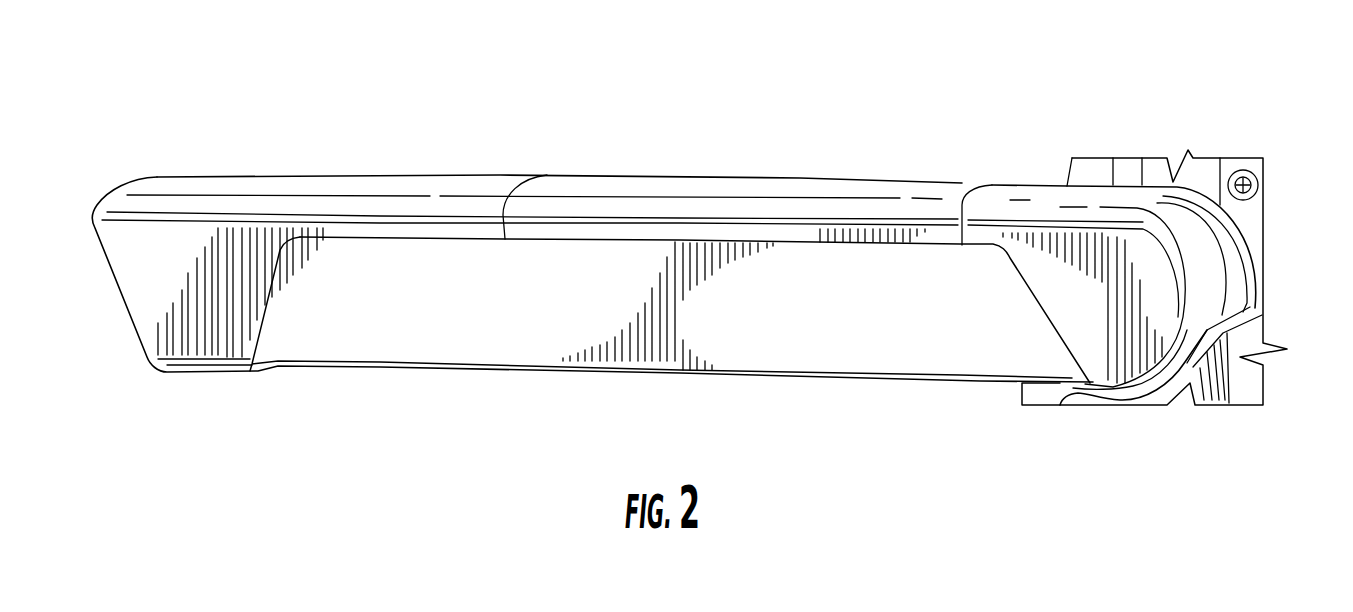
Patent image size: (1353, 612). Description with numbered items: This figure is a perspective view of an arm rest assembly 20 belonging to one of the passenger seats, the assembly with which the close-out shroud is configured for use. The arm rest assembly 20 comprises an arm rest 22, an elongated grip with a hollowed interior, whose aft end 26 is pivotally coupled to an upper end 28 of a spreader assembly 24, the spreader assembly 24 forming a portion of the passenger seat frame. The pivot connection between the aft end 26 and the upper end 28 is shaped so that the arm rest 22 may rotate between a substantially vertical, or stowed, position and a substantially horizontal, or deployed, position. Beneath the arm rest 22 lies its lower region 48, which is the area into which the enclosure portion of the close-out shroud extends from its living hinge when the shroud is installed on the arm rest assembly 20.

The arm rest assembly 20 is at (811, 106).
The arm rest 22 is at (393, 176).
The spreader assembly 24 is at (1243, 392).
The aft end 26 is at (1025, 205).
The upper end 28 is at (1215, 253).
The lower region 48 is at (937, 353).